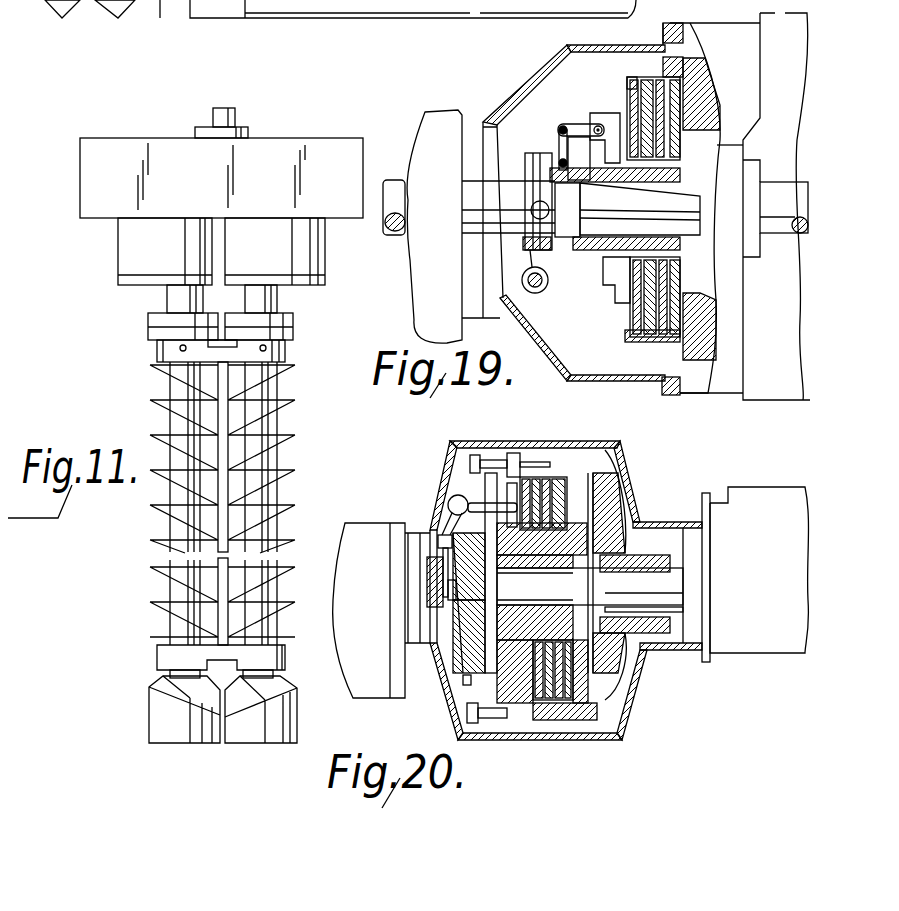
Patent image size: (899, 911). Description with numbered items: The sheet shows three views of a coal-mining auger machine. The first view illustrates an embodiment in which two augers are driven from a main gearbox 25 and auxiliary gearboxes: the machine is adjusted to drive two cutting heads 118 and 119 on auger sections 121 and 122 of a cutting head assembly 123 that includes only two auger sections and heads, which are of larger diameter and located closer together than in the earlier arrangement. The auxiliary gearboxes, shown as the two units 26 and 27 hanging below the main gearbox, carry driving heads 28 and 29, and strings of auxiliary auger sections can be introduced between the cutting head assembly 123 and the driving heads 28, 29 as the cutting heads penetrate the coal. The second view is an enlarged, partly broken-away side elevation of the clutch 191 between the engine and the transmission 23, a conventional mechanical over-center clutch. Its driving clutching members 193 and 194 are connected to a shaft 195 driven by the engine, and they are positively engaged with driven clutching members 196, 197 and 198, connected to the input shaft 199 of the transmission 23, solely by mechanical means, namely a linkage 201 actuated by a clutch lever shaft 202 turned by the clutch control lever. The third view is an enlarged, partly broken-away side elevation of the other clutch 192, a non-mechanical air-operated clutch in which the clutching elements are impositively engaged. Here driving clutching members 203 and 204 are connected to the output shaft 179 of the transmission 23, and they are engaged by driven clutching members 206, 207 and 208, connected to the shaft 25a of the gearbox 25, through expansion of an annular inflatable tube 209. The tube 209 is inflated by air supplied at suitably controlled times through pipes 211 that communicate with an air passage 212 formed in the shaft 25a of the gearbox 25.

In FIG. 11, the gearbox 25 is at (285, 137).
In FIG. 20, the gearbox 25 is at (357, 665).
In FIG. 11, the motor 26 is at (118, 250).
In FIG. 11, the motor 27 is at (328, 257).
In FIG. 11, the driving head 28 is at (167, 298).
In FIG. 11, the driving head 29 is at (278, 307).
In FIG. 11, the auger section 121 is at (170, 537).
In FIG. 11, the auger section 122 is at (277, 537).
In FIG. 11, the cutting head assembly 123 is at (300, 485).
In FIG. 11, the cutting head 118 is at (187, 743).
In FIG. 11, the cutting head 119 is at (268, 743).
In FIG. 19, the clutch 191 is at (512, 68).
In FIG. 20, the clutch 192 is at (565, 423).
In FIG. 19, the driving clutching member 193 is at (665, 342).
In FIG. 19, the driving clutching member 194 is at (623, 303).
In FIG. 19, the shaft 195 is at (783, 192).
In FIG. 19, the driven clutching member 196 is at (743, 143).
In FIG. 19, the driven clutching member 197 is at (645, 97).
In FIG. 19, the driven clutching member 198 is at (623, 112).
In FIG. 19, the input shaft 199 is at (388, 180).
In FIG. 19, the linkage 201 is at (583, 130).
In FIG. 19, the clutch lever shaft 202 is at (545, 289).
In FIG. 20, the driving clutching member 203 is at (583, 687).
In FIG. 20, the driving clutching member 204 is at (540, 700).
In FIG. 20, the driven clutching member 206 is at (607, 503).
In FIG. 20, the driven clutching member 207 is at (603, 725).
In FIG. 20, the driven clutching member 208 is at (533, 697).
In FIG. 20, the annular inflatable tube 209 is at (512, 677).
In FIG. 20, the pipe 211 is at (447, 523).
In FIG. 20, the air passage 212 is at (442, 596).
In FIG. 20, the shaft 25a is at (433, 592).
In FIG. 20, the output shaft 179 is at (637, 580).
In FIG. 20, the transmission 23 is at (757, 492).